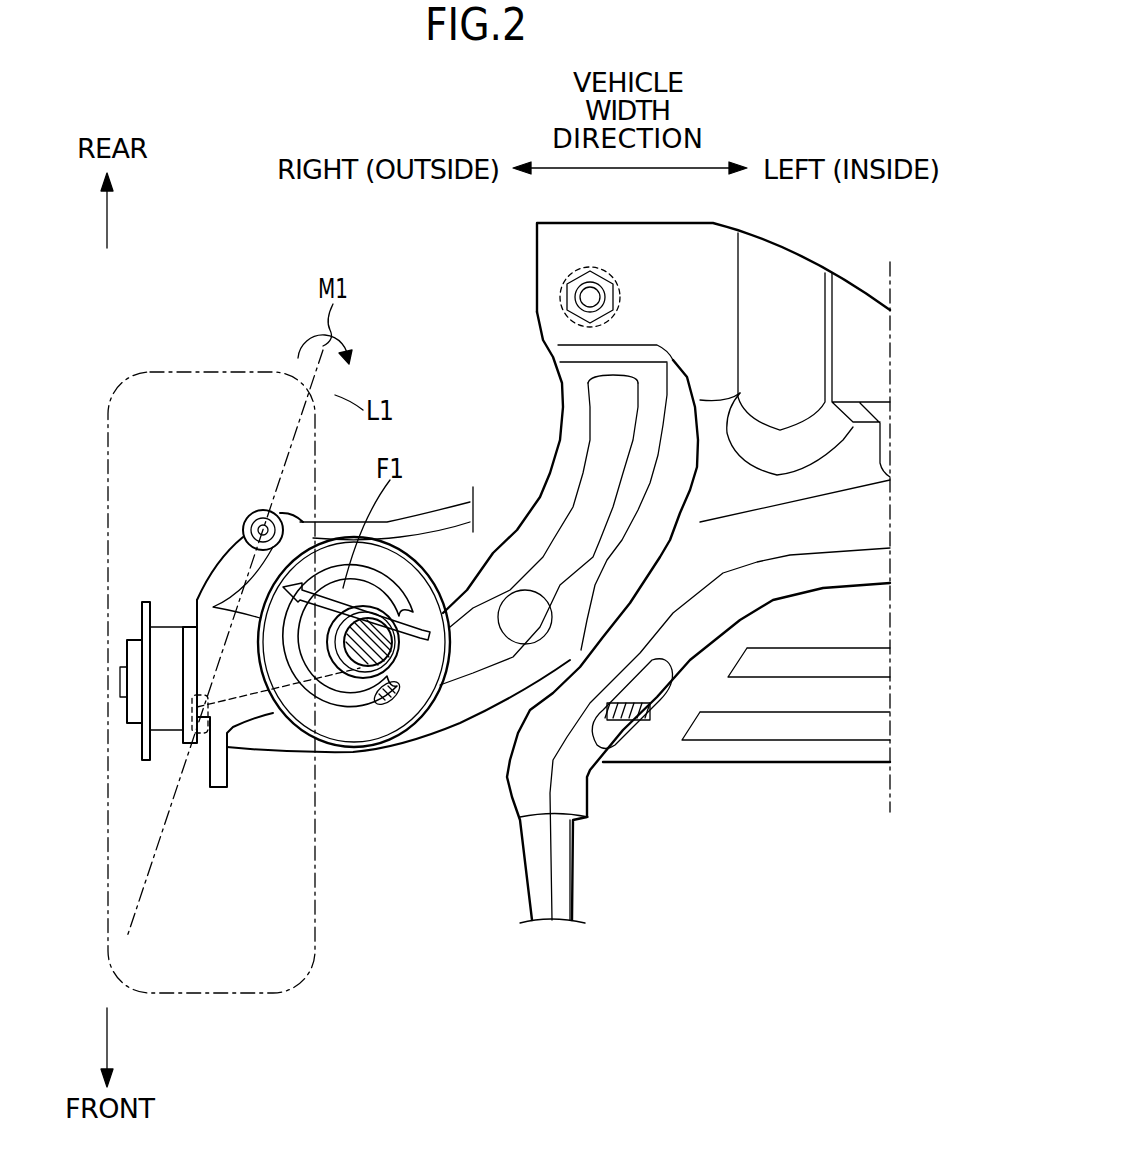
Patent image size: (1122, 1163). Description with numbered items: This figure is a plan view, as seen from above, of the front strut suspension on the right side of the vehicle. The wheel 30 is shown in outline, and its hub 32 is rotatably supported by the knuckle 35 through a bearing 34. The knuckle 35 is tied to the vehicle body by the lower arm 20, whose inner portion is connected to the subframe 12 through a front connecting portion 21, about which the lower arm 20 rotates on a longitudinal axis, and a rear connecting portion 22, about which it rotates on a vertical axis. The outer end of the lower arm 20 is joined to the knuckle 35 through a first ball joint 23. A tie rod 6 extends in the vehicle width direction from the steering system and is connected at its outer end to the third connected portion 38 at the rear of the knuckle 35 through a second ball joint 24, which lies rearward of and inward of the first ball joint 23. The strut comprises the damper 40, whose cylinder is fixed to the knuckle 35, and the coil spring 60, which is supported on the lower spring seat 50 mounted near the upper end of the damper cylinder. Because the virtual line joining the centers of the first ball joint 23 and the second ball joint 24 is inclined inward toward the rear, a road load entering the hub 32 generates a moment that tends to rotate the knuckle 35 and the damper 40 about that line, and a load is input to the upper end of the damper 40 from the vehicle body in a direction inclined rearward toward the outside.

The subframe 12 is at (800, 273).
The lower arm 20 is at (568, 432).
The front connecting portion 21 is at (660, 700).
The rear connecting portion 22 is at (560, 288).
The first ball joint 23 is at (205, 745).
The second ball joint 24 is at (255, 505).
The wheel 30 is at (231, 370).
The hub 32 is at (137, 737).
The bearing 34 is at (162, 723).
The knuckle 35 is at (194, 585).
The third connected portion 38 is at (243, 527).
The damper 40 is at (370, 700).
The lower spring seat 50 is at (428, 720).
The coil spring 60 is at (330, 572).
The tie rod 6 is at (440, 503).